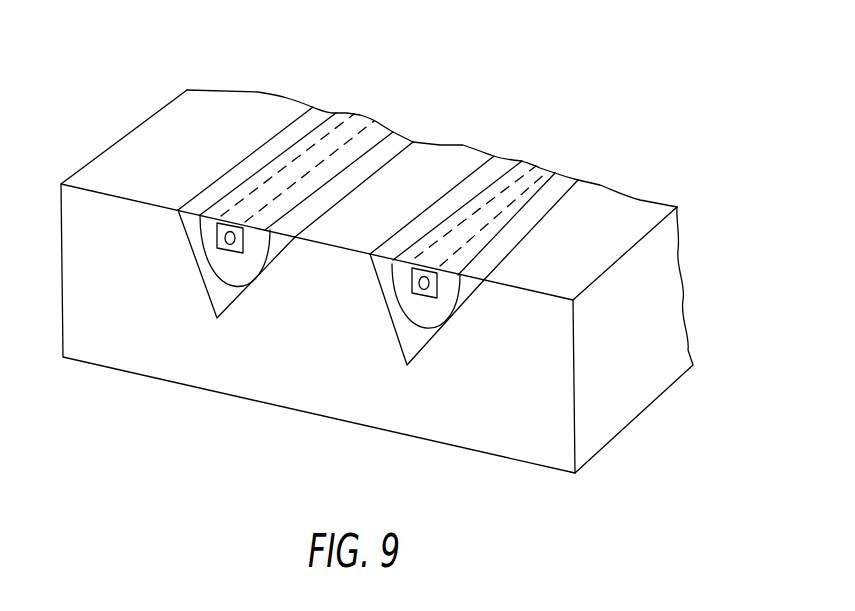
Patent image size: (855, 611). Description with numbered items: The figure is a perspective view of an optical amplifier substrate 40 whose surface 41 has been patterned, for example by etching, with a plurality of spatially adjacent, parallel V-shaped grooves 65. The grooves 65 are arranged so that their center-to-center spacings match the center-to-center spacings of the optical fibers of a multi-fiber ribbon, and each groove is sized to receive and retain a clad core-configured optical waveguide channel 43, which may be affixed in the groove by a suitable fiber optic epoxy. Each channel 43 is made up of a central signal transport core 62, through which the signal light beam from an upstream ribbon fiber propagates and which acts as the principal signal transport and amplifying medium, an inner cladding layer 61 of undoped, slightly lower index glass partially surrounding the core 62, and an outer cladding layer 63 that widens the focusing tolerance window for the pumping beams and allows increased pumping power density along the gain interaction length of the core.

The substrate 40 is at (647, 322).
The surface of the substrate 41 is at (173, 127).
The optical waveguide channel 43 is at (365, 118).
The inner cladding layer 61 is at (217, 238).
The signal transport core 62 is at (218, 250).
The outer cladding layer 63 is at (242, 267).
The V-shaped groove 65 is at (238, 299).